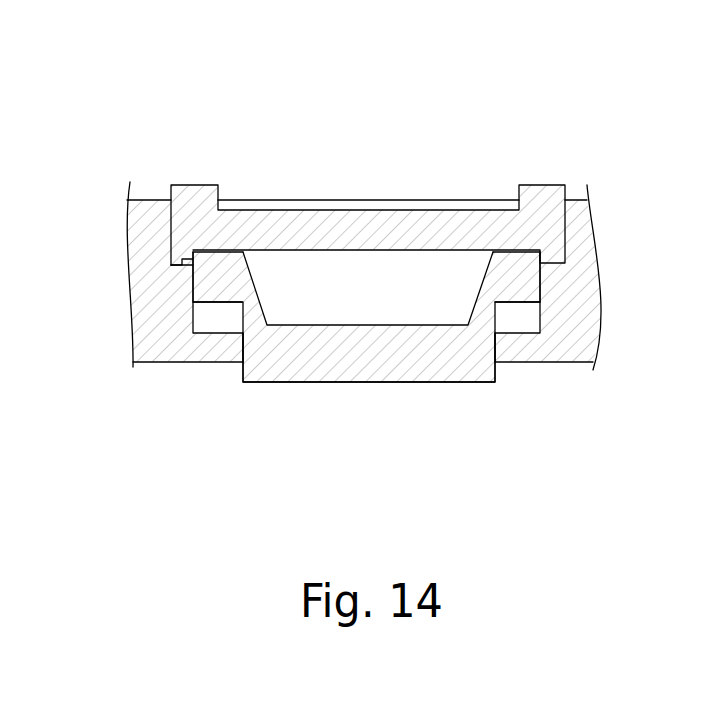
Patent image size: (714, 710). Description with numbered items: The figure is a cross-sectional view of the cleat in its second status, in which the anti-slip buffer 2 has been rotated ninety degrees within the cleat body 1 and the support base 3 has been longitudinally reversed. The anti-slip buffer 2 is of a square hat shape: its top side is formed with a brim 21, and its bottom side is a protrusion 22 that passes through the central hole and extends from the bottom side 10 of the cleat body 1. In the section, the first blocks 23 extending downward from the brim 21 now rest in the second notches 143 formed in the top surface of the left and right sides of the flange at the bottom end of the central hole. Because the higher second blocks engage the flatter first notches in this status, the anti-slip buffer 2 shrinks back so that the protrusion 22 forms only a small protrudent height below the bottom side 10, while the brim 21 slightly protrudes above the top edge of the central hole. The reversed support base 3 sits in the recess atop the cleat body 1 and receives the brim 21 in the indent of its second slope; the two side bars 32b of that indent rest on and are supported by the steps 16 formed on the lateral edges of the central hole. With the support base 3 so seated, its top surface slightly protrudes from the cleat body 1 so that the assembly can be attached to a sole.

The cleat body 1 is at (145, 227).
The support base 3 is at (313, 223).
The brim 21 is at (215, 262).
The side bars 32b is at (173, 265).
The step 16 is at (176, 268).
The first blocks 23 is at (213, 292).
The second notch 143 is at (218, 335).
The protrusion 22 is at (293, 370).
The anti-slip buffer 2 is at (373, 382).
The bottom side 10 is at (540, 362).